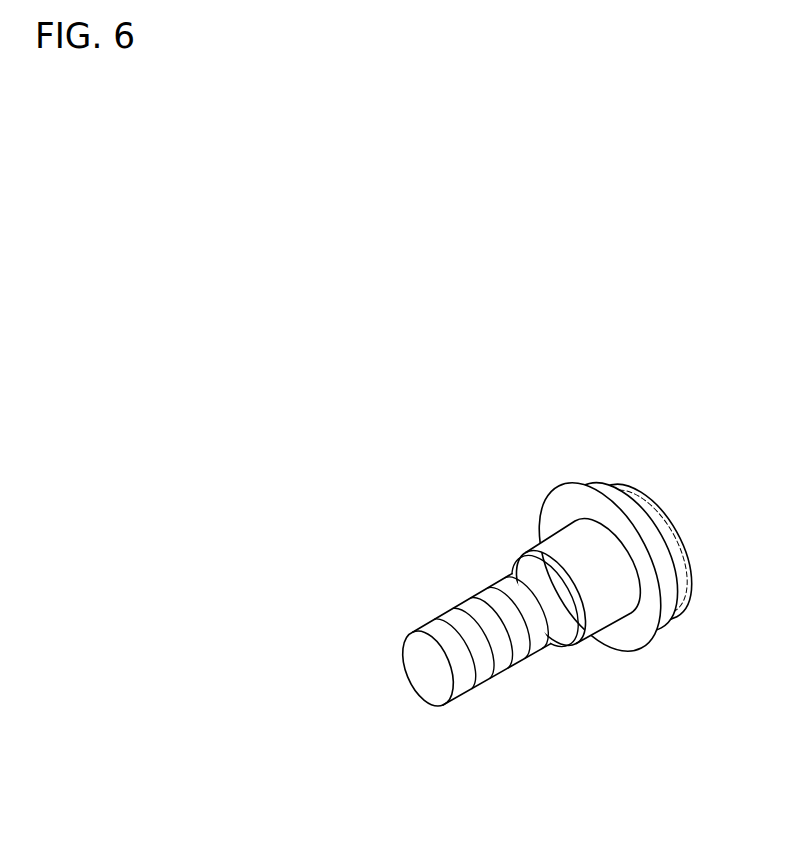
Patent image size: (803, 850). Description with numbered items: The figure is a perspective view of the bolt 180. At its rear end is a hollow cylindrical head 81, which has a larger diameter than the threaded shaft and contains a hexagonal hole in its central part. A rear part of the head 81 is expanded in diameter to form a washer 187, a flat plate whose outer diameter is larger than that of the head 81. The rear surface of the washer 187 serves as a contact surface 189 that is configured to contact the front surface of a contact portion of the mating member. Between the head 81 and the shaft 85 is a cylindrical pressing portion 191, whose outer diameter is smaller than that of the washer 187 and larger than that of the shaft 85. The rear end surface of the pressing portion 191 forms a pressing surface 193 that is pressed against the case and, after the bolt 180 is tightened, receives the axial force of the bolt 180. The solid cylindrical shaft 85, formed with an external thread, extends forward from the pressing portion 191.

The bolt 180 is at (553, 526).
The head 81 is at (638, 507).
The washer 187 is at (587, 490).
The contact surface 189 is at (553, 515).
The pressing portion 191 is at (589, 643).
The pressing surface 193 is at (566, 644).
The shaft 85 is at (494, 677).